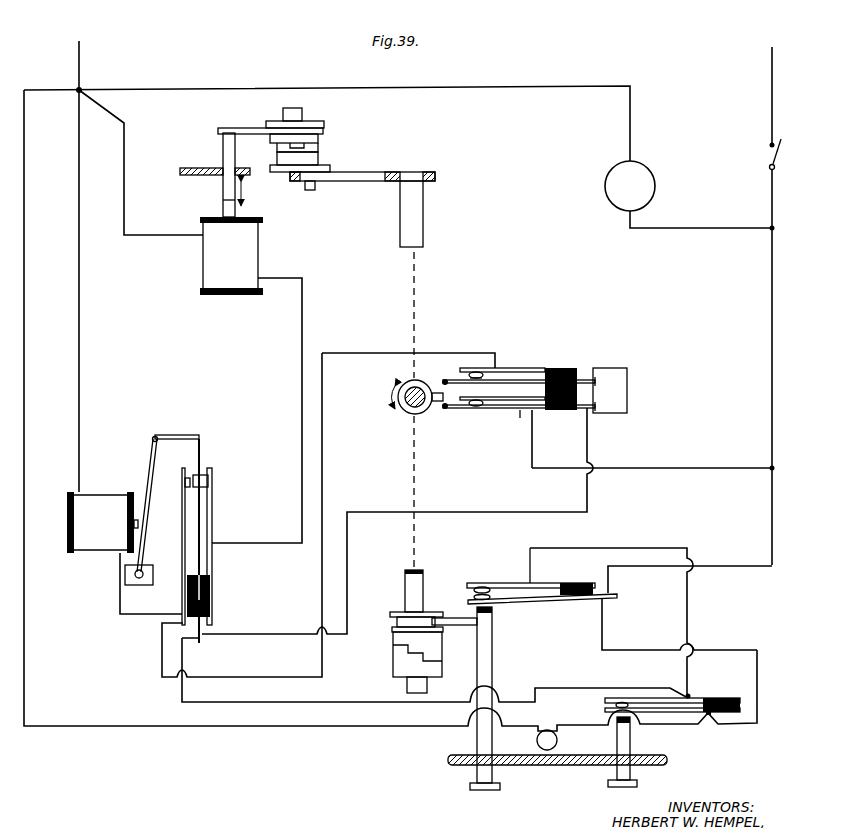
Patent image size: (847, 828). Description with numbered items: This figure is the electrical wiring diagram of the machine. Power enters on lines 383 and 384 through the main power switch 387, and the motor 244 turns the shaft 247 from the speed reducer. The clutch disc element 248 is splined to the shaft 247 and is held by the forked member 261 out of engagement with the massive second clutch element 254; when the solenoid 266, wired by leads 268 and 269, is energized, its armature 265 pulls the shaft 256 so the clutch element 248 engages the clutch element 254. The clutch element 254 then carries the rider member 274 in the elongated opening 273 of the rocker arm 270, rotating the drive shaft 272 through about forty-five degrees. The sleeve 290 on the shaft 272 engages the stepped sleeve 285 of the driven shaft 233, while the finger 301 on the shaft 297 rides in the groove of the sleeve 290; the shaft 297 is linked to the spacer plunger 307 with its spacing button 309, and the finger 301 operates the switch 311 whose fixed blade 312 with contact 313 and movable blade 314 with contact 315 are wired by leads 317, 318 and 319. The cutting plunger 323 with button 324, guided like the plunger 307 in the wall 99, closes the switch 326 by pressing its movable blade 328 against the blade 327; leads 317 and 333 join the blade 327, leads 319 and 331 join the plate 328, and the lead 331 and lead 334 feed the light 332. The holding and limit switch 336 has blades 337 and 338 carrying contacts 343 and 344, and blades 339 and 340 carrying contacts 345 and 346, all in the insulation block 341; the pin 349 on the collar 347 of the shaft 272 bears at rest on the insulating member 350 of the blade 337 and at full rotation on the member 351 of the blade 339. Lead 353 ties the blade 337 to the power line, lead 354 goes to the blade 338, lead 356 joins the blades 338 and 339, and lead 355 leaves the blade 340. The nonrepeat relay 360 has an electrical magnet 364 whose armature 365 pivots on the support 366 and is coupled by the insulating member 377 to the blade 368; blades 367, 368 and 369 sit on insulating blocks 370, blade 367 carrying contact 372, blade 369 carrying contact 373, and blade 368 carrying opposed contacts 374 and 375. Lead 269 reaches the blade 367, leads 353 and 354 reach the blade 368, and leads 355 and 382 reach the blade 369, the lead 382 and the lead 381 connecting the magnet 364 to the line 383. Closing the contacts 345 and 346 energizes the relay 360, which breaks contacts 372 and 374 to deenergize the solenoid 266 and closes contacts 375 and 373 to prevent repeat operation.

The power line 383 is at (82, 62).
The power line 384 is at (770, 88).
The main power switch 387 is at (770, 151).
The motor 244 is at (603, 187).
The forked member 261 is at (262, 126).
The shaft 247 is at (302, 116).
The clutch disc element 248 is at (318, 148).
The second disc clutch element 254 is at (318, 161).
The rocker arm 270 is at (392, 173).
The shaft 256 is at (223, 188).
The armature 265 is at (223, 213).
The rider member 274 is at (312, 190).
The elongated opening 273 is at (361, 182).
The drive shaft 272 is at (423, 228).
The solenoid 266 is at (266, 257).
The electrical lead 268 is at (145, 235).
The electrical lead 269 is at (302, 312).
The lead 355 is at (360, 353).
The insulating member 351 is at (448, 378).
The contact 346 is at (476, 370).
The contact 345 is at (500, 370).
The switch blade 340 is at (535, 368).
The switch blade 339 is at (562, 368).
The insulation block 341 is at (596, 369).
The pin 349 is at (443, 379).
The contact 344 is at (482, 399).
The lead 356 is at (627, 392).
The collar 347 is at (400, 410).
The contact 343 is at (462, 408).
The switch blade 338 is at (520, 412).
The switch blade 337 is at (540, 412).
The lead 354 is at (590, 444).
The insulating member 350 is at (447, 409).
The holding and limit switch 336 is at (522, 428).
The lead 353 is at (700, 468).
The lead 381 is at (80, 438).
The insulating member 377 is at (180, 435).
The contact 374 is at (206, 474).
The armature 365 is at (147, 478).
The contact 375 is at (197, 470).
The nonrepeat relay 360 is at (224, 500).
The contact 372 is at (208, 481).
The contact 373 is at (185, 486).
The switch blade 369 is at (186, 525).
The switch blade 367 is at (213, 536).
The electrical magnet 364 is at (100, 557).
The switch blade 368 is at (201, 565).
The lead 382 is at (120, 605).
The pivotal support 366 is at (142, 586).
The insulating blocks 370 is at (211, 600).
The lead 333 is at (183, 663).
The lead 334 is at (300, 726).
The switch 311 is at (515, 580).
The contact 313 is at (486, 587).
The lead 317 is at (580, 548).
The fixed blade 312 is at (537, 583).
The contact 315 is at (474, 596).
The finger 301 is at (460, 618).
The lead 318 is at (633, 567).
The shaft 297 is at (492, 610).
The movable blade 314 is at (535, 598).
The sleeve 290 is at (442, 637).
The lead 319 is at (603, 630).
The sleeve 285 is at (393, 665).
The driven shaft 233 is at (407, 690).
The switch blade 327 is at (703, 696).
The switch blade 328 is at (612, 705).
The light 332 is at (537, 741).
The lead 331 is at (568, 728).
The wall 99 is at (448, 760).
The spacer plunger 307 is at (478, 775).
The cutting operating plunger 323 is at (632, 770).
The switch 326 is at (712, 738).
The spacing operation button 309 is at (480, 792).
The cutting operation button 324 is at (621, 789).